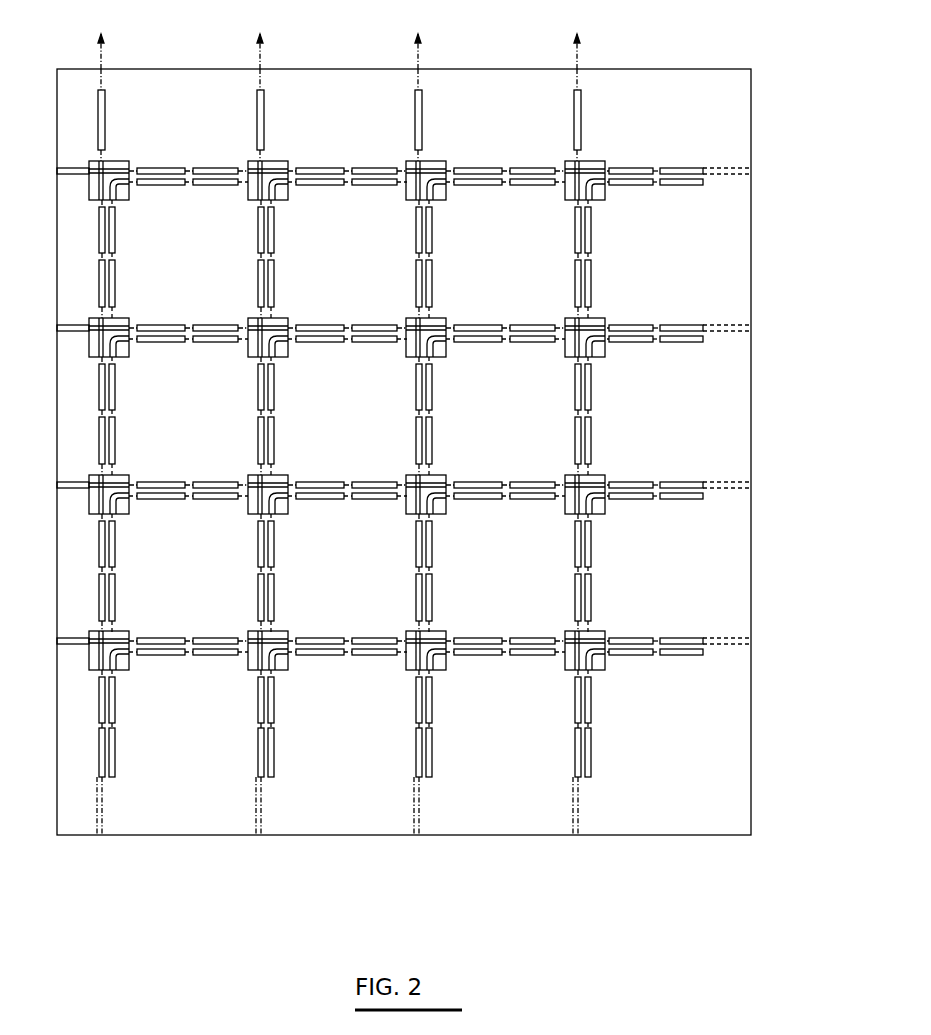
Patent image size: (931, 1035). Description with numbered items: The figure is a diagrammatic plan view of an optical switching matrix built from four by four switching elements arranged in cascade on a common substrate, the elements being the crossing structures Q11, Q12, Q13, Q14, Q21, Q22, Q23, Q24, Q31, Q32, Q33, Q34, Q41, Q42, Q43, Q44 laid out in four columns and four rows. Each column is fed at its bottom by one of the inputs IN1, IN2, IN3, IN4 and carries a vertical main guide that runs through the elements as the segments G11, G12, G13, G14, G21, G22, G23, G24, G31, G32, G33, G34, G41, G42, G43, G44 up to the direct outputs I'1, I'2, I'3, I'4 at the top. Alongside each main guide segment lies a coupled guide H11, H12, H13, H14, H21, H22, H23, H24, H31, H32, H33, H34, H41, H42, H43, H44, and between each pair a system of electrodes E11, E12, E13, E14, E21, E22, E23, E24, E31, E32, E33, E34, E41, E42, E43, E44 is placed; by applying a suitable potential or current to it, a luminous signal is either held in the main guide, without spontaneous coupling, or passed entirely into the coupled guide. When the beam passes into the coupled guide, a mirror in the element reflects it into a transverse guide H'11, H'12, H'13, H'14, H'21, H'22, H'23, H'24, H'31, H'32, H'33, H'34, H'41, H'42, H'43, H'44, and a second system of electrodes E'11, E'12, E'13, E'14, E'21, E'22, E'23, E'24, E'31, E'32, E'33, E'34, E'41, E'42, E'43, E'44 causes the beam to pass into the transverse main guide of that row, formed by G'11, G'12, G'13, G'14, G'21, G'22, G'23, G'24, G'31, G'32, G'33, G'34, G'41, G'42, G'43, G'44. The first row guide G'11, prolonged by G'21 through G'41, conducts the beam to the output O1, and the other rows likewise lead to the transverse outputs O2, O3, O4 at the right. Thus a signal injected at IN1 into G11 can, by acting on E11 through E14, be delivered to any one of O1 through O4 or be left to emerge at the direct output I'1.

The switching element Q11 is at (95, 673).
The switching element Q12 is at (95, 517).
The switching element Q13 is at (95, 360).
The switching element Q14 is at (95, 203).
The switching element Q21 is at (249, 673).
The switching element Q22 is at (249, 517).
The switching element Q23 is at (249, 360).
The switching element Q24 is at (249, 203).
The switching element Q31 is at (407, 673).
The switching element Q32 is at (407, 517).
The switching element Q33 is at (407, 360).
The switching element Q34 is at (407, 203).
The switching element Q41 is at (566, 673).
The switching element Q42 is at (566, 517).
The switching element Q43 is at (566, 360).
The switching element Q44 is at (566, 203).
The main guide G11 is at (83, 752).
The main guide G12 is at (83, 573).
The main guide G13 is at (83, 416).
The main guide G14 is at (83, 259).
The main guide G21 is at (237, 752).
The main guide G22 is at (237, 573).
The main guide G23 is at (237, 416).
The main guide G24 is at (237, 259).
The main guide G31 is at (395, 752).
The main guide G32 is at (395, 573).
The main guide G33 is at (395, 416).
The main guide G34 is at (395, 259).
The main guide G41 is at (554, 752).
The main guide G42 is at (554, 573).
The main guide G43 is at (554, 416).
The main guide G44 is at (554, 259).
The guide H11 is at (135, 747).
The guide H12 is at (139, 573).
The guide H13 is at (139, 416).
The guide H14 is at (139, 259).
The guide H21 is at (292, 747).
The guide H22 is at (296, 573).
The guide H23 is at (296, 416).
The guide H24 is at (296, 259).
The guide H31 is at (448, 747).
The guide H32 is at (453, 573).
The guide H33 is at (453, 416).
The guide H34 is at (453, 259).
The guide H41 is at (609, 747).
The guide H42 is at (613, 573).
The guide H43 is at (613, 416).
The guide H44 is at (613, 259).
The system of electrodes E11 is at (87, 731).
The system of electrodes E12 is at (87, 580).
The system of electrodes E13 is at (87, 423).
The system of electrodes E14 is at (87, 266).
The system of electrodes E21 is at (241, 731).
The system of electrodes E22 is at (241, 580).
The system of electrodes E23 is at (241, 423).
The system of electrodes E24 is at (241, 266).
The system of electrodes E31 is at (398, 731).
The system of electrodes E32 is at (398, 580).
The system of electrodes E33 is at (398, 423).
The system of electrodes E34 is at (398, 266).
The system of electrodes E41 is at (558, 731).
The system of electrodes E42 is at (558, 580).
The system of electrodes E43 is at (558, 423).
The system of electrodes E44 is at (558, 266).
The main guide G'11 is at (188, 619).
The main guide G'12 is at (188, 463).
The main guide G'13 is at (188, 306).
The main guide G'14 is at (188, 145).
The main guide G'21 is at (347, 619).
The main guide G'22 is at (347, 463).
The main guide G'23 is at (347, 306).
The main guide G'24 is at (347, 145).
The main guide G'31 is at (505, 619).
The main guide G'32 is at (505, 463).
The main guide G'33 is at (505, 306).
The main guide G'34 is at (503, 145).
The main guide G'41 is at (679, 619).
The main guide G'42 is at (679, 463).
The main guide G'43 is at (679, 306).
The main guide G'44 is at (677, 145).
The guide H'11 is at (188, 682).
The guide H'12 is at (188, 526).
The guide H'13 is at (188, 369).
The guide H'14 is at (188, 212).
The guide H'21 is at (347, 682).
The guide H'22 is at (347, 526).
The guide H'23 is at (347, 369).
The guide H'24 is at (347, 212).
The guide H'31 is at (505, 682).
The guide H'32 is at (505, 526).
The guide H'33 is at (505, 369).
The guide H'34 is at (505, 212).
The guide H'41 is at (676, 682).
The guide H'42 is at (655, 526).
The guide H'43 is at (655, 369).
The guide H'44 is at (655, 212).
The system of electrodes E'11 is at (192, 664).
The system of electrodes E'12 is at (192, 508).
The system of electrodes E'13 is at (192, 351).
The system of electrodes E'14 is at (192, 194).
The system of electrodes E'21 is at (347, 664).
The system of electrodes E'22 is at (347, 508).
The system of electrodes E'23 is at (347, 351).
The system of electrodes E'24 is at (347, 194).
The system of electrodes E'31 is at (509, 664).
The system of electrodes E'32 is at (509, 508).
The system of electrodes E'33 is at (509, 351).
The system of electrodes E'34 is at (509, 194).
The system of electrodes E'41 is at (664, 664).
The system of electrodes E'42 is at (664, 508).
The system of electrodes E'43 is at (664, 351).
The system of electrodes E'44 is at (664, 194).
The direct output I'1 is at (109, 82).
The direct output I'2 is at (268, 82).
The direct output I'3 is at (426, 82).
The direct output I'4 is at (585, 82).
The input IN1 is at (101, 846).
The input IN2 is at (260, 846).
The input IN3 is at (418, 846).
The input IN4 is at (577, 846).
The output O1 is at (755, 640).
The transverse output O2 is at (755, 484).
The transverse output O3 is at (755, 327).
The transverse output O4 is at (755, 170).